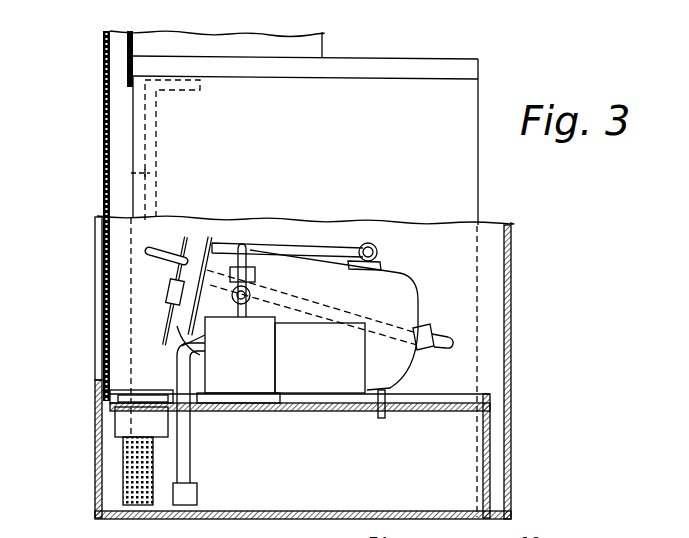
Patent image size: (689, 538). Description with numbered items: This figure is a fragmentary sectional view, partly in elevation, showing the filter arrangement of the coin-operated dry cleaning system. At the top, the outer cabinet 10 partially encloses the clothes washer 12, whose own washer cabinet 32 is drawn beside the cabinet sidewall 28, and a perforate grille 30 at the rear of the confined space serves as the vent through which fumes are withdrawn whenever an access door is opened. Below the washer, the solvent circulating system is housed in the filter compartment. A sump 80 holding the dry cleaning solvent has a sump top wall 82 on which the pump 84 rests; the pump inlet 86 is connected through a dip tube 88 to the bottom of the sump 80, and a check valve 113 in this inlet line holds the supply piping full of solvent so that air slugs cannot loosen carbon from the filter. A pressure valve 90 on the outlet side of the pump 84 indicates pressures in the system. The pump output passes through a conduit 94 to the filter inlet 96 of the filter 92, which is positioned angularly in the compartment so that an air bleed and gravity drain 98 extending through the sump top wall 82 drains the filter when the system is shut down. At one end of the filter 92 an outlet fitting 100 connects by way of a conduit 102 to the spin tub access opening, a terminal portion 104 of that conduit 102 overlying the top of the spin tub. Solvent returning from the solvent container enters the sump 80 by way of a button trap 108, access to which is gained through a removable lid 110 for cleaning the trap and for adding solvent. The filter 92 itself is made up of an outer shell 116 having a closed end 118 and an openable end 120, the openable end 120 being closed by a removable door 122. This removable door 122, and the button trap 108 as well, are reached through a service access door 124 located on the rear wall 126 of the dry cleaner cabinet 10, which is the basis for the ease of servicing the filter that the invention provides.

The outer cabinet 10 is at (105, 32).
The clothes washer 12 is at (452, 59).
The sidewall 28 is at (311, 44).
The perforate grille 30 is at (127, 54).
The washer cabinet 32 is at (458, 183).
The sump 80 is at (478, 465).
The sump top wall 82 is at (440, 411).
The pump 84 is at (333, 400).
The pump inlet 86 is at (203, 340).
The dip tube 88 is at (190, 423).
The pressure valve 90 is at (258, 254).
The filter 92 is at (408, 279).
The conduit 94 is at (312, 247).
The filter inlet 96 is at (376, 264).
The air bleed and gravity drain 98 is at (387, 401).
The outlet fitting 100 is at (432, 325).
The conduit 102 is at (131, 173).
The terminal portion 104 is at (181, 91).
The button trap 108 is at (153, 466).
The removable lid 110 is at (141, 402).
The check valve 113 is at (190, 496).
The outer shell 116 is at (336, 270).
The closed end 118 is at (419, 303).
The openable end 120 is at (210, 237).
The removable door 122 is at (176, 268).
The service access door 124 is at (97, 281).
The rear wall 126 is at (103, 125).